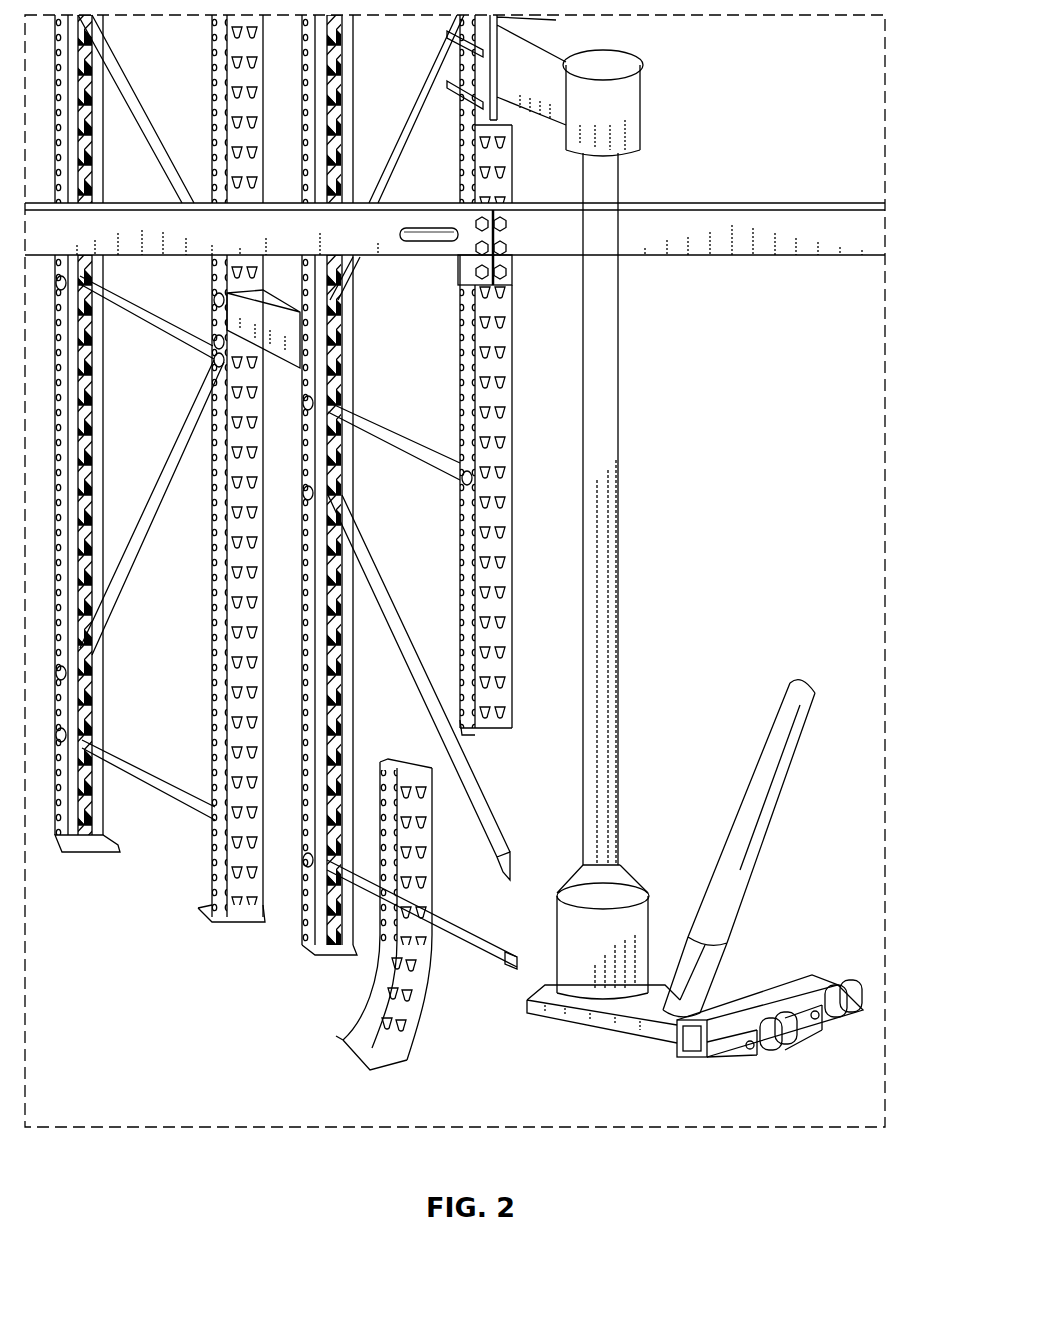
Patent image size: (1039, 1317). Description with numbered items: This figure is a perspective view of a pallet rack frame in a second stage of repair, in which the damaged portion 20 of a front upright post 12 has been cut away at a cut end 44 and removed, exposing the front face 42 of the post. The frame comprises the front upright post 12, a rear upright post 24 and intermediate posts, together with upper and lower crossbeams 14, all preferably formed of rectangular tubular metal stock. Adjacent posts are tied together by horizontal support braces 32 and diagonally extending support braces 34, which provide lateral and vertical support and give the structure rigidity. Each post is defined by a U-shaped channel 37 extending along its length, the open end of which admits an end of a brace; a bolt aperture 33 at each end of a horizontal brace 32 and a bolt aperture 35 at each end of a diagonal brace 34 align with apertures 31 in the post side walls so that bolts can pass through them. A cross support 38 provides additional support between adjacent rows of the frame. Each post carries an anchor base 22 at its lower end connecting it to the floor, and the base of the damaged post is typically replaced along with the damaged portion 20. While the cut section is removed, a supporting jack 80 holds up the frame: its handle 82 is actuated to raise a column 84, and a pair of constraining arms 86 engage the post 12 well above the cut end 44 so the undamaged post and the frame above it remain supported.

The front upright post 12 is at (345, 340).
The crossbeam 14 is at (852, 245).
The damaged portion 20 is at (387, 914).
The anchor base 22 is at (348, 1036).
The rear upright post 24 is at (297, 433).
The aperture 31 is at (468, 540).
The horizontal support brace 32 is at (307, 622).
The bolt aperture 33 is at (505, 953).
The diagonal support brace 34 is at (138, 550).
The bolt aperture 35 is at (83, 423).
The U-shaped channel 37 is at (340, 622).
The cross support 38 is at (272, 347).
The front face 42 is at (486, 391).
The cut end 44 is at (498, 730).
The supporting jack 80 is at (695, 868).
The handle 82 is at (798, 725).
The column 84 is at (612, 308).
The constraining arms 86 is at (463, 97).